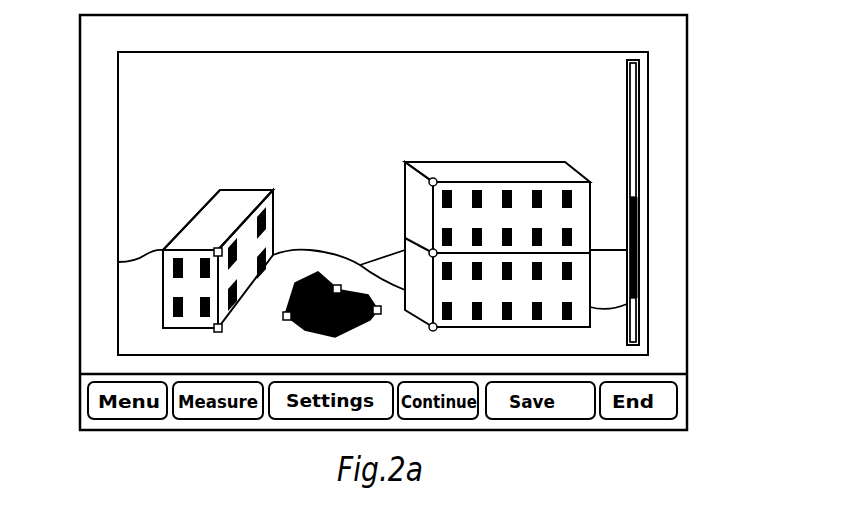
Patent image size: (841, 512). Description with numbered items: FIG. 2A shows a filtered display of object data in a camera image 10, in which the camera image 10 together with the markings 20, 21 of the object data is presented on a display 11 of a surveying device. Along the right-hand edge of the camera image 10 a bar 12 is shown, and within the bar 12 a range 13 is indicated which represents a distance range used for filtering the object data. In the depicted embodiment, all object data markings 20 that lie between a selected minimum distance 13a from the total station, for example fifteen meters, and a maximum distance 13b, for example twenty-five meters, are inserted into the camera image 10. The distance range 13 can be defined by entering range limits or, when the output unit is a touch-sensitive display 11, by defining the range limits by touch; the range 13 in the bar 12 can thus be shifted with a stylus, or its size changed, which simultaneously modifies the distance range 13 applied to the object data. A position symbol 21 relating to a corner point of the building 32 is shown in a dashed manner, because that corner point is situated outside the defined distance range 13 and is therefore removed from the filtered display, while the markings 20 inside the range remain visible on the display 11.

The display 11 is at (356, 222).
The camera image 10 is at (336, 203).
The position symbol 21 is at (149, 225).
The building 32 is at (149, 217).
The object data markings 20 is at (145, 269).
The bar 12 is at (687, 202).
The maximum distance 13b is at (689, 131).
The range 13 is at (682, 247).
The minimum distance 13a is at (689, 319).